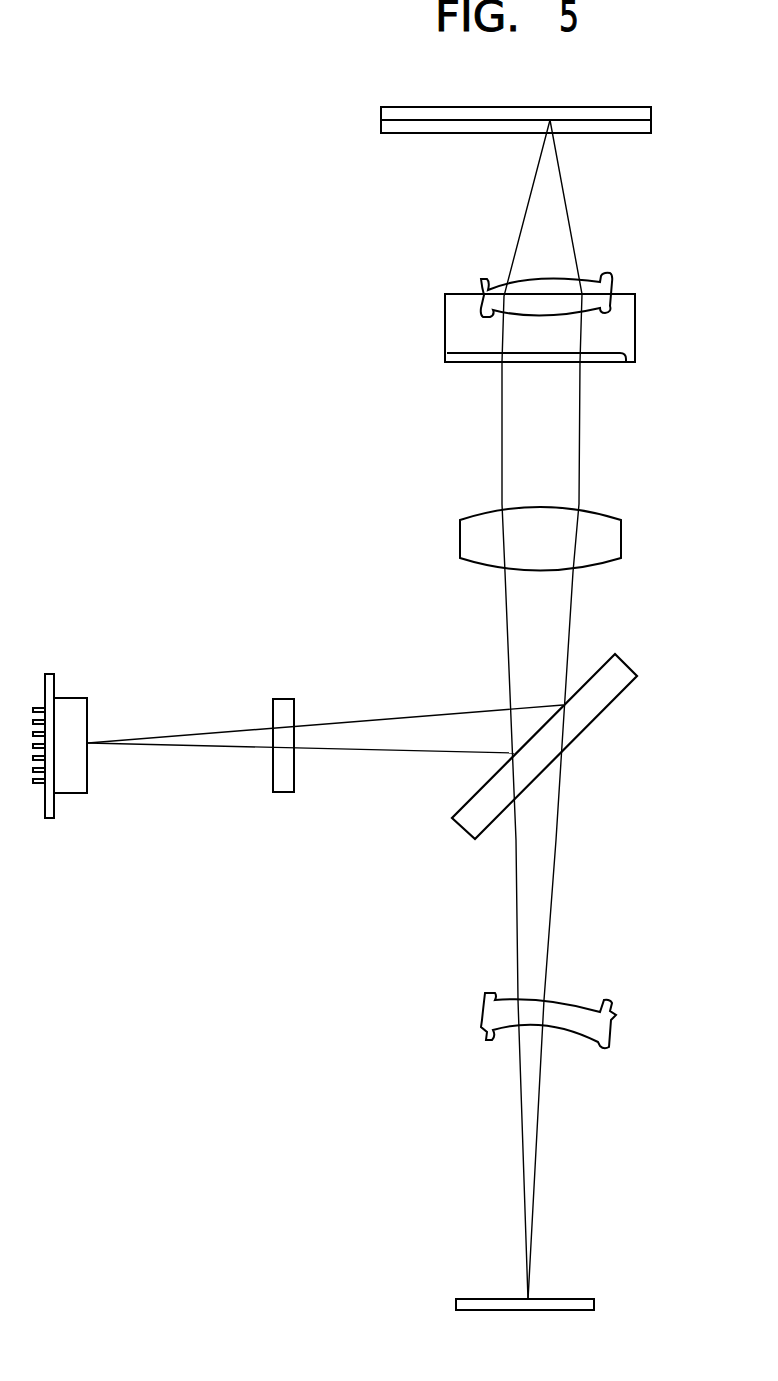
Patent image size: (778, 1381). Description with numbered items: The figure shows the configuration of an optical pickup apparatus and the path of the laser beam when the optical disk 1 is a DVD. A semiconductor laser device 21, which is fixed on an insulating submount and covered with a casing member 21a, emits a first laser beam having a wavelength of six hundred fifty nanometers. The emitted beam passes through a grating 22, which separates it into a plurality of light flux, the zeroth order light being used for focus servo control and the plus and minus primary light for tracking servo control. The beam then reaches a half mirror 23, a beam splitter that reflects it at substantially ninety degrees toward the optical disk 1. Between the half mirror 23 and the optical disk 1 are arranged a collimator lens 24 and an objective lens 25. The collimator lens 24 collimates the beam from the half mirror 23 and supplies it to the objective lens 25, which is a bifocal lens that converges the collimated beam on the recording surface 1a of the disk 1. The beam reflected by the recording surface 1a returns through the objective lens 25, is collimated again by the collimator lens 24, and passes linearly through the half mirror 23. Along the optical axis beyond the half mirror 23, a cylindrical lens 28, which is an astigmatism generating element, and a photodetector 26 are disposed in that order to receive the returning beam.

The optical disk 1 is at (629, 147).
The recording surface 1a is at (462, 120).
The semiconductor laser device 21 is at (72, 688).
The casing member 21a is at (70, 795).
The grating 22 is at (287, 698).
The half mirror 23 is at (618, 655).
The collimator lens 24 is at (621, 535).
The objective lens 25 is at (636, 323).
The photodetector 26 is at (596, 1303).
The cylindrical lens 28 is at (616, 1032).